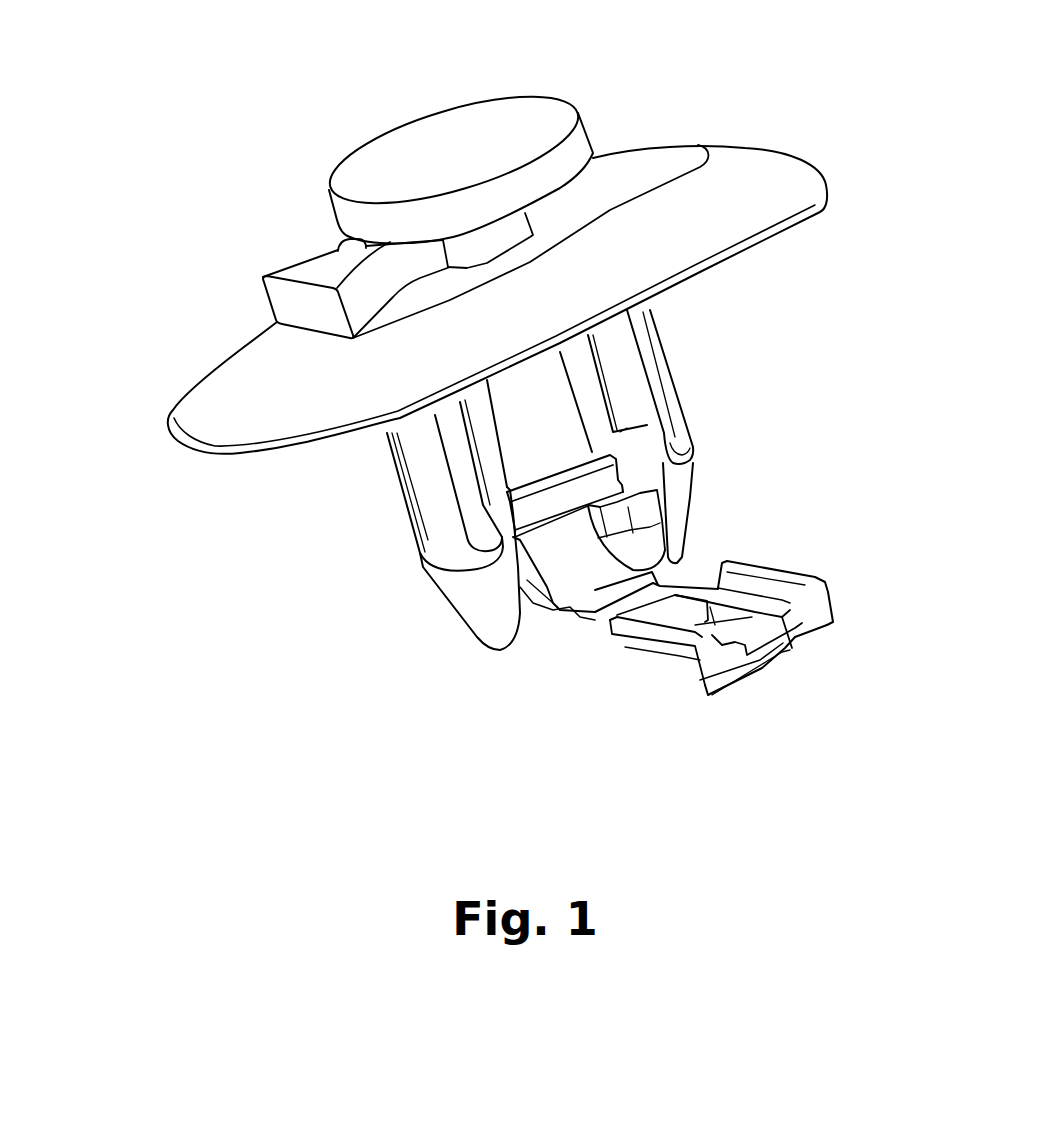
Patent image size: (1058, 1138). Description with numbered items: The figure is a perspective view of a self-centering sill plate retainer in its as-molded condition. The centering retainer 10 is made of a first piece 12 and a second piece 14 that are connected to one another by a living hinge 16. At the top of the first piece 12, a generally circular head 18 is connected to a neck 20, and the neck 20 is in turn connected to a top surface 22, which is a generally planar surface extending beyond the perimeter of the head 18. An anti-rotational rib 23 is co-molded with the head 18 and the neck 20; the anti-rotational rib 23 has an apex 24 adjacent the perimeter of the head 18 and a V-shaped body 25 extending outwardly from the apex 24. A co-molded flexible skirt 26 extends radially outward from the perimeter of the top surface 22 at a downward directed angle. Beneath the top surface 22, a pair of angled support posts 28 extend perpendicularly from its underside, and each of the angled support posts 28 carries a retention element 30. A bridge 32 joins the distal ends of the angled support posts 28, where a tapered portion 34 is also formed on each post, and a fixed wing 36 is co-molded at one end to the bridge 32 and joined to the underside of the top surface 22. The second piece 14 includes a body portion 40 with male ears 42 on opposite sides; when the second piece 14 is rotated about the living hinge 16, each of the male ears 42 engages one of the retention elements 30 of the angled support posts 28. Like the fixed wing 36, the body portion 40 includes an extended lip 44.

The centering retainer 10 is at (213, 148).
The first piece 12 is at (310, 348).
The second piece 14 is at (717, 663).
The living hinge 16 is at (583, 570).
The head 18 is at (422, 178).
The neck 20 is at (487, 257).
The top surface 22 is at (647, 178).
The anti-rotational rib 23 is at (295, 262).
The apex 24 is at (338, 248).
The V-shaped body 25 is at (310, 272).
The flexible skirt 26 is at (257, 429).
The angled support posts 28 is at (447, 513).
The retention element 30 is at (615, 382).
The bridge 32 is at (597, 481).
The tapered portion 34 is at (482, 597).
The fixed wing 36 is at (503, 400).
The body portion 40 is at (812, 617).
The male ears 42 is at (718, 610).
The extended lip 44 is at (768, 668).